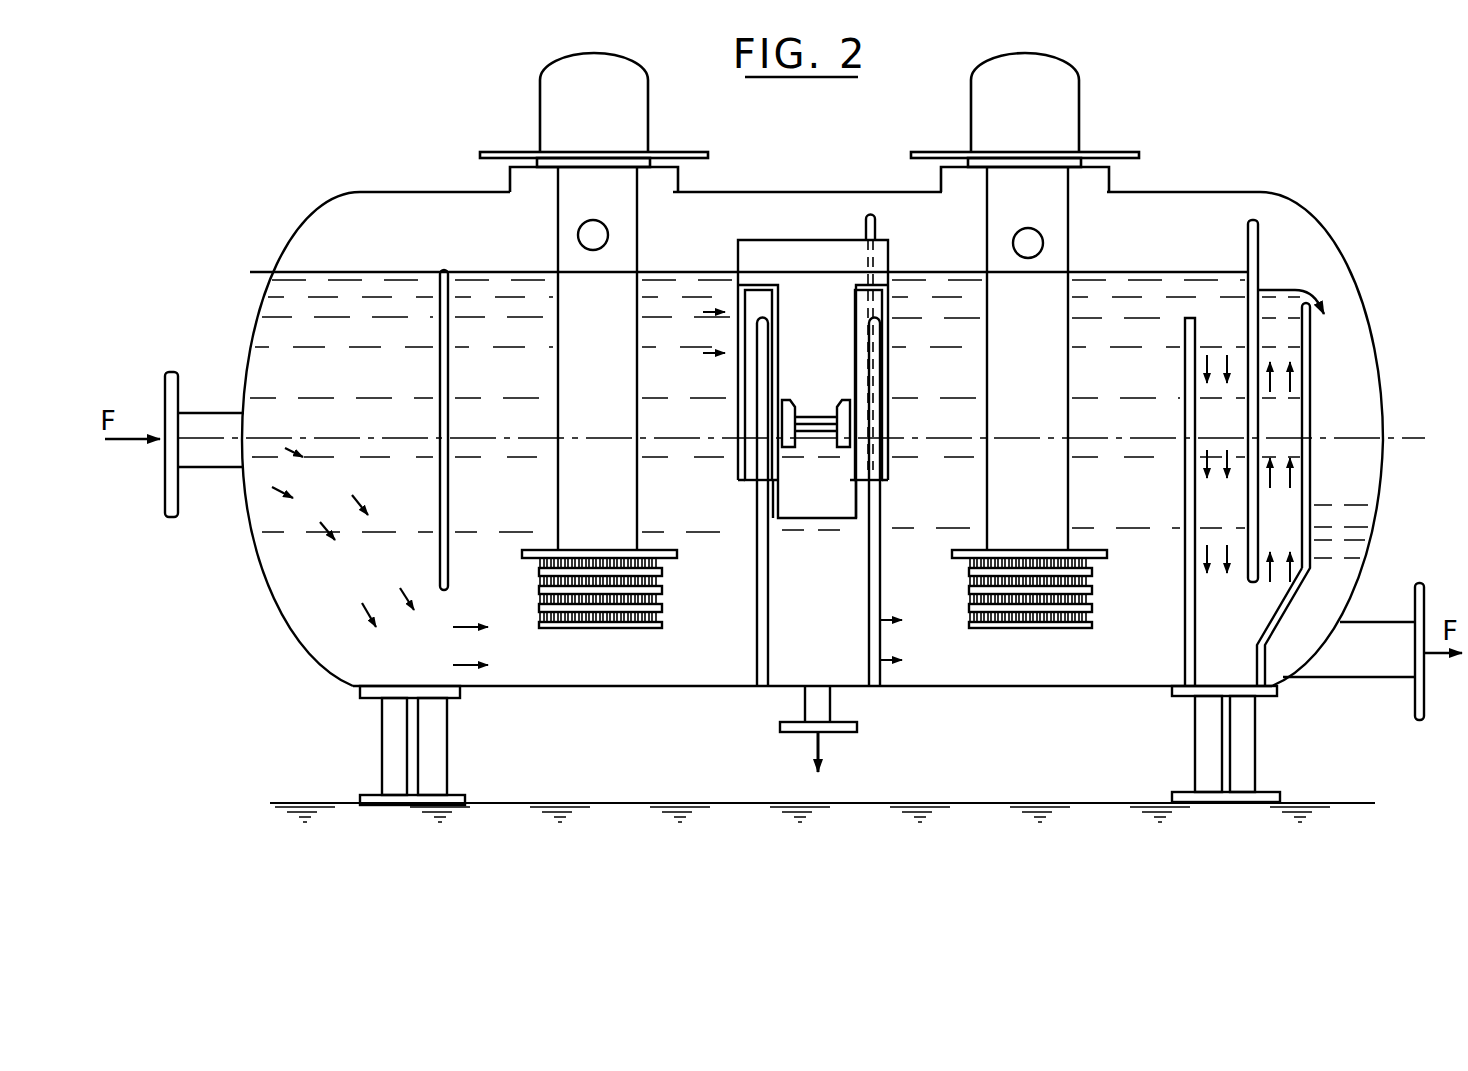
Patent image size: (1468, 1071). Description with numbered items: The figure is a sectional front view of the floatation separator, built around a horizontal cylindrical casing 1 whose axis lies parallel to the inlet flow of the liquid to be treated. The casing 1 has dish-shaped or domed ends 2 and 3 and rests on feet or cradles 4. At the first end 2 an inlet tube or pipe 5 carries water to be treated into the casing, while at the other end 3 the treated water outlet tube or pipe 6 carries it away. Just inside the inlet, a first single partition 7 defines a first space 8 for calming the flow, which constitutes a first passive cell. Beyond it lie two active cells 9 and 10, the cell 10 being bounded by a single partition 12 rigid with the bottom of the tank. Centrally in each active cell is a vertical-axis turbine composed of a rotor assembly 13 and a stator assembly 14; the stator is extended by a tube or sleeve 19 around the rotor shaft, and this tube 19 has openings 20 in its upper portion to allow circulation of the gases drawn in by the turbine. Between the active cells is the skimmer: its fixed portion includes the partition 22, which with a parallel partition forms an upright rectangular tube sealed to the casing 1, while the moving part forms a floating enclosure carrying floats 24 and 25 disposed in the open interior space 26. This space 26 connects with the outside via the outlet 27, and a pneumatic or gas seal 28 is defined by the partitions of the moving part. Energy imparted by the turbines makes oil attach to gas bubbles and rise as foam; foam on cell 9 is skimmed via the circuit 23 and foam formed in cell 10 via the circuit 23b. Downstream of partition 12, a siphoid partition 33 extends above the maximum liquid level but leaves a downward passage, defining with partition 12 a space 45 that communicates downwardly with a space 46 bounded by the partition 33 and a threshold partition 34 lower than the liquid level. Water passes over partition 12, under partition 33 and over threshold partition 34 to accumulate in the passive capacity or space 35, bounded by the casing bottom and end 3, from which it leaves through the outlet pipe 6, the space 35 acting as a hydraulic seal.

The cylindrical casing 1 is at (782, 192).
The domed end 2 is at (292, 242).
The domed end 3 is at (1345, 268).
The feet or cradles 4 is at (433, 755).
The inlet tube or pipe 5 is at (165, 418).
The treated water outlet tube or pipe 6 is at (1424, 612).
The first single partition 7 is at (444, 270).
The first space 8 is at (341, 406).
The active cell 9 is at (595, 406).
The active cell 10 is at (1068, 404).
The single partition 12 is at (1195, 340).
The rotor assembly 13 is at (610, 628).
The stator assembly 14 is at (657, 580).
The tube or sleeve 19 is at (557, 258).
The openings 20 is at (600, 238).
The partition 22 is at (880, 538).
The circuit 23 is at (760, 283).
The circuit 23b is at (878, 265).
The float 24 is at (785, 398).
The float 25 is at (847, 398).
The open interior space 26 is at (816, 493).
The outlet 27 is at (840, 718).
The pneumatic or gas seal 28 is at (758, 305).
The siphoid partition 33 is at (1258, 250).
The threshold partition 34 is at (1311, 336).
The passive capacity or space 35 is at (1343, 508).
The space 45 is at (1202, 505).
The space 46 is at (1290, 515).